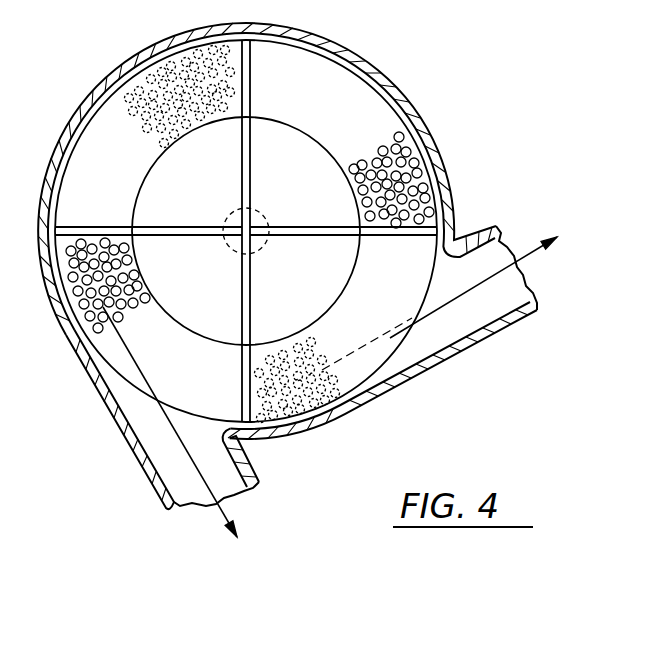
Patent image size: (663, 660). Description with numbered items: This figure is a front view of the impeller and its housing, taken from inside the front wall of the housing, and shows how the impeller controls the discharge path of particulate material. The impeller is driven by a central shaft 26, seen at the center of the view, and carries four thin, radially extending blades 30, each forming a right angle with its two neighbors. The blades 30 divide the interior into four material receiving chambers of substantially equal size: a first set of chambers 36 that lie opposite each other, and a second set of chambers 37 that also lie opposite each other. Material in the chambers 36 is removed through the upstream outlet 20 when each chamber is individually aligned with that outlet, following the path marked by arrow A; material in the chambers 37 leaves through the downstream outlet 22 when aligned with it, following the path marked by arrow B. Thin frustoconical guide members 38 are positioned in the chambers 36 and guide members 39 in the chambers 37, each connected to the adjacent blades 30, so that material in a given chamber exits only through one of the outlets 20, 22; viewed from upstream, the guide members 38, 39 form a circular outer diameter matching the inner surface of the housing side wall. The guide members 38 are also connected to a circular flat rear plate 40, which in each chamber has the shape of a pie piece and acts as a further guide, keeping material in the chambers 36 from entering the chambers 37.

The upstream outlet 20 is at (187, 495).
The downstream outlet 22 is at (524, 284).
The central shaft 26 is at (270, 248).
The blades 30 is at (240, 156).
The material receiving chambers 36 is at (313, 117).
The material receiving chambers 37 is at (91, 175).
The guide members 38 is at (342, 166).
The guide members 39 is at (133, 194).
The rear plate 40 is at (292, 220).
The material path arrows A is at (236, 503).
The material path arrow B is at (528, 252).